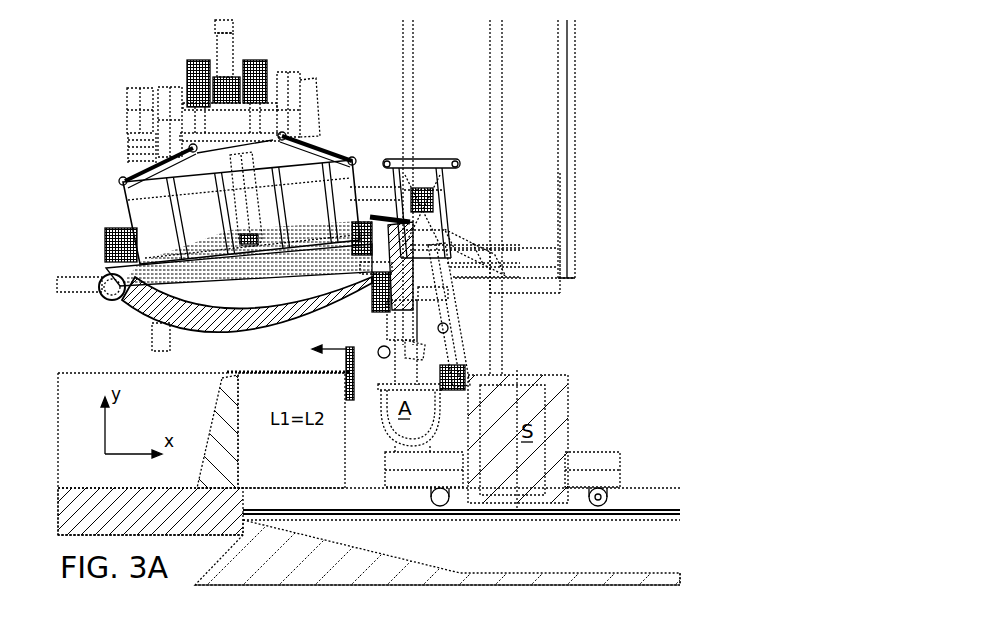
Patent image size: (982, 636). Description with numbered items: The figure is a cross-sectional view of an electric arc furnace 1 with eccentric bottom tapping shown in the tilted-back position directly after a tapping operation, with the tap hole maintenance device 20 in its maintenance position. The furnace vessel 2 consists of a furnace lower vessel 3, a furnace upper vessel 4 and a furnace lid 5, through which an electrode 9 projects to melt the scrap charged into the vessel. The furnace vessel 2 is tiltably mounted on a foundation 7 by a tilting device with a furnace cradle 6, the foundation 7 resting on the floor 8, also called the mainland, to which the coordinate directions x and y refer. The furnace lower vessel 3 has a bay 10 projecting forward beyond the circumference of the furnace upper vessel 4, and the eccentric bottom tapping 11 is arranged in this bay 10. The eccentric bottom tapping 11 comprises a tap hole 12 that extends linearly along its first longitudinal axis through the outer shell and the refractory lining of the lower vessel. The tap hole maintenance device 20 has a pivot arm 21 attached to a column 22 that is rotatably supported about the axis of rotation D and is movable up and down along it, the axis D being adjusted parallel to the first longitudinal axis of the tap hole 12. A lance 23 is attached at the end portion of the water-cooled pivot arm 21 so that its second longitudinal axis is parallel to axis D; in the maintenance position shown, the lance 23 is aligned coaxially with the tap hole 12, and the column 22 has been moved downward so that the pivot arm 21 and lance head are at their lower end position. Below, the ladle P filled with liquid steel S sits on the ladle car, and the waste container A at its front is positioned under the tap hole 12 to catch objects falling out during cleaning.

The electric arc furnace 1 is at (580, 87).
The furnace vessel 2 is at (317, 107).
The furnace lower vessel 3 is at (135, 292).
The furnace upper vessel 4 is at (143, 212).
The furnace lid 5 is at (143, 173).
The furnace cradle 6 is at (217, 340).
The foundation 7 is at (263, 404).
The floor 8 is at (214, 544).
The electrode 9 is at (243, 217).
The bay 10 is at (400, 240).
The eccentric bottom tapping 11 is at (373, 275).
The tap hole 12 is at (373, 287).
The tap hole maintenance device 20 is at (450, 187).
The pivot arm 21 is at (417, 378).
The column 22 is at (447, 290).
The lance 23 is at (383, 357).